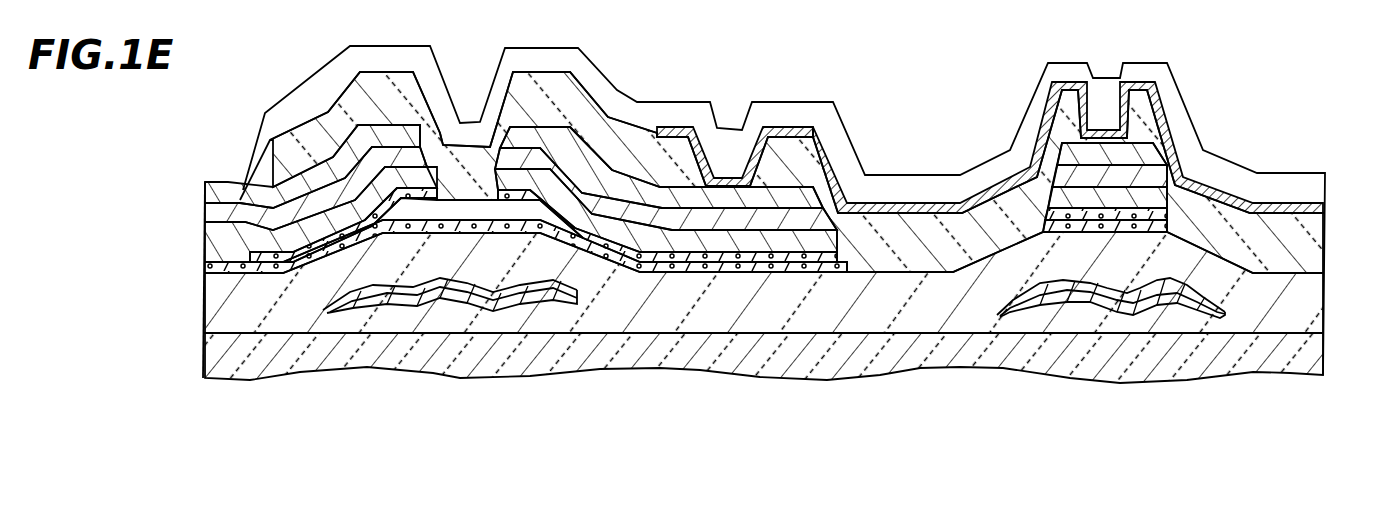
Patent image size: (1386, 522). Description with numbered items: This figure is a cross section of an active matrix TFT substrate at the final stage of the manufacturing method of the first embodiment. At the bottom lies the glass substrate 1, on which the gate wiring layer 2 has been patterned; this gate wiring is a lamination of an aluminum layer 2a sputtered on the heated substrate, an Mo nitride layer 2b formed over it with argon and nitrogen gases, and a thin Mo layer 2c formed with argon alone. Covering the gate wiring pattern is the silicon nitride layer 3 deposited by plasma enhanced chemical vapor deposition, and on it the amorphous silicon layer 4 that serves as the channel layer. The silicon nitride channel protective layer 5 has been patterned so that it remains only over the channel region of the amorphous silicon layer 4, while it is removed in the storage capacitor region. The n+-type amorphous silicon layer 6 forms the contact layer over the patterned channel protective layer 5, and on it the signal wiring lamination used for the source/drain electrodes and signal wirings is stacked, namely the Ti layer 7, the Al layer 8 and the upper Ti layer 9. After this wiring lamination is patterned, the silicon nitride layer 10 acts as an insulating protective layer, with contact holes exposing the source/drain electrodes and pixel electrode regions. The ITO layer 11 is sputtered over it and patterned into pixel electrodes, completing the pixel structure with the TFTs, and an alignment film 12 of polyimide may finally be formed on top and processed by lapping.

The glass substrate 1 is at (1318, 350).
The gate wiring layer 2 is at (774, 376).
The aluminum layer 2a is at (373, 316).
The Mo nitride layer 2b is at (405, 305).
The Mo layer 2c is at (435, 304).
The silicon nitride layer 3 is at (1318, 297).
The amorphous silicon layer 4 is at (232, 280).
The channel protective layer 5 is at (503, 213).
The n+-type amorphous silicon layer 6 is at (205, 262).
The Ti layer 7 is at (243, 236).
The Al layer 8 is at (248, 215).
The Ti layer 9 is at (238, 190).
The silicon nitride layer 10 is at (1320, 240).
The ITO layer 11 is at (677, 127).
The alignment film 12 is at (1320, 188).